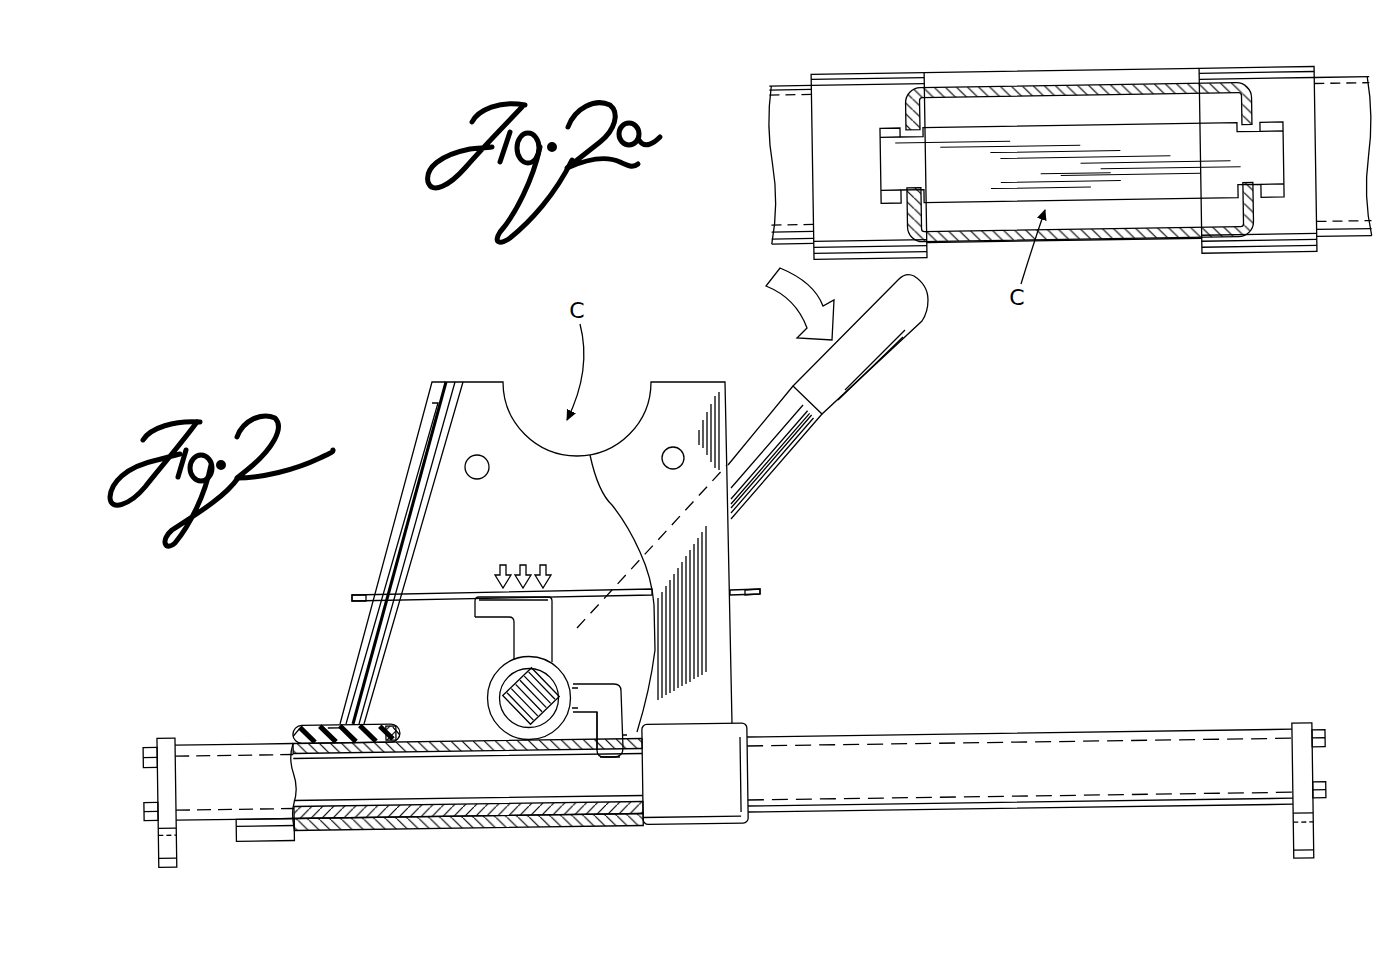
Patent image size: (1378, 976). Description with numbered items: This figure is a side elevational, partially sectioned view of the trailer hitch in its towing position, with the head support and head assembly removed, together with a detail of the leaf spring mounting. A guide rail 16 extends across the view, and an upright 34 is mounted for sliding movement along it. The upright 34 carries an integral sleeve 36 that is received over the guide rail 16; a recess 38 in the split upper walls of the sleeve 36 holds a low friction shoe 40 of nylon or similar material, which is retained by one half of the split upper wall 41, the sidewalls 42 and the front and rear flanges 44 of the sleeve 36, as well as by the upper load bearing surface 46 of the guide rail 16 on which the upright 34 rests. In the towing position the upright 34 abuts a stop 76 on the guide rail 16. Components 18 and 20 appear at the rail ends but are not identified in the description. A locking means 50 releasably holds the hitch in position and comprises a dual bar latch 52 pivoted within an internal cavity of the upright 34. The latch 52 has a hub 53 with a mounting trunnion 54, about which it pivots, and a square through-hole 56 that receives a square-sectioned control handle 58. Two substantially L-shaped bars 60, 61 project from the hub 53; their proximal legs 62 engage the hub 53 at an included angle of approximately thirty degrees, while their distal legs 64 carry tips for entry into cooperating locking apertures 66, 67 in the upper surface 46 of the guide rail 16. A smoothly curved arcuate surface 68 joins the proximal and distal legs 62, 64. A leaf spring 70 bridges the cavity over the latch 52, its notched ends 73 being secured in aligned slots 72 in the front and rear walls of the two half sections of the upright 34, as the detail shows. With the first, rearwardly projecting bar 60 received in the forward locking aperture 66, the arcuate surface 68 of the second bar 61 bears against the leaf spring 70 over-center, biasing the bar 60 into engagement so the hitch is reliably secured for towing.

In FIG. 2, the guide rails 16 is at (1045, 734).
In FIG. 2, the end plate 18 is at (167, 739).
In FIG. 2, the mounting flange 20 is at (168, 847).
In FIG. 2, the upright 34 is at (731, 667).
In FIG. 2A, the upright 34 is at (1247, 88).
In FIG. 2, the sleeve 36 is at (702, 814).
In FIG. 2, the recess 38 is at (392, 728).
In FIG. 2, the low friction shoe 40 is at (318, 738).
In FIG. 2, the upper wall 41 is at (333, 721).
In FIG. 2, the sidewalls 42 is at (723, 742).
In FIG. 2, the front and rear flanges 44 is at (293, 737).
In FIG. 2, the upper load bearing surface 46 is at (378, 740).
In FIG. 2, the locking means 50 is at (750, 545).
In FIG. 2, the dual bar latch 52 is at (472, 693).
In FIG. 2, the hub 53 is at (492, 732).
In FIG. 2, the mounting trunnion 54 is at (538, 718).
In FIG. 2, the square through-hole 56 is at (512, 672).
In FIG. 2, the control handle 58 is at (792, 452).
In FIG. 2, the first bar 60 is at (597, 690).
In FIG. 2, the second bar 61 is at (552, 622).
In FIG. 2, the proximal legs 62 is at (540, 636).
In FIG. 2, the distal legs 64 is at (483, 605).
In FIG. 2, the first locking aperture 66 is at (627, 735).
In FIG. 2, the second locking aperture 67 is at (856, 745).
In FIG. 2, the arcuate surface 68 is at (560, 592).
In FIG. 2, the leaf spring 70 is at (444, 596).
In FIG. 2A, the leaf spring 70 is at (1135, 175).
In FIG. 2, the slots 72 is at (363, 598).
In FIG. 2A, the slots 72 is at (910, 127).
In FIG. 2A, the notched ends 73 is at (913, 177).
In FIG. 2, the stop 76 is at (268, 836).